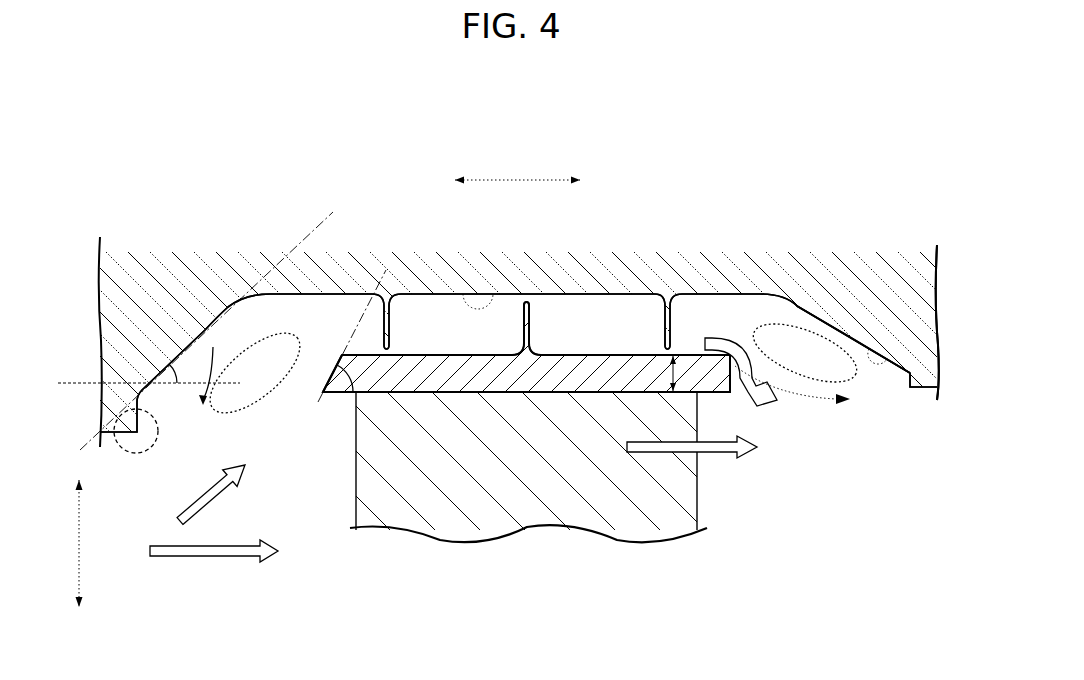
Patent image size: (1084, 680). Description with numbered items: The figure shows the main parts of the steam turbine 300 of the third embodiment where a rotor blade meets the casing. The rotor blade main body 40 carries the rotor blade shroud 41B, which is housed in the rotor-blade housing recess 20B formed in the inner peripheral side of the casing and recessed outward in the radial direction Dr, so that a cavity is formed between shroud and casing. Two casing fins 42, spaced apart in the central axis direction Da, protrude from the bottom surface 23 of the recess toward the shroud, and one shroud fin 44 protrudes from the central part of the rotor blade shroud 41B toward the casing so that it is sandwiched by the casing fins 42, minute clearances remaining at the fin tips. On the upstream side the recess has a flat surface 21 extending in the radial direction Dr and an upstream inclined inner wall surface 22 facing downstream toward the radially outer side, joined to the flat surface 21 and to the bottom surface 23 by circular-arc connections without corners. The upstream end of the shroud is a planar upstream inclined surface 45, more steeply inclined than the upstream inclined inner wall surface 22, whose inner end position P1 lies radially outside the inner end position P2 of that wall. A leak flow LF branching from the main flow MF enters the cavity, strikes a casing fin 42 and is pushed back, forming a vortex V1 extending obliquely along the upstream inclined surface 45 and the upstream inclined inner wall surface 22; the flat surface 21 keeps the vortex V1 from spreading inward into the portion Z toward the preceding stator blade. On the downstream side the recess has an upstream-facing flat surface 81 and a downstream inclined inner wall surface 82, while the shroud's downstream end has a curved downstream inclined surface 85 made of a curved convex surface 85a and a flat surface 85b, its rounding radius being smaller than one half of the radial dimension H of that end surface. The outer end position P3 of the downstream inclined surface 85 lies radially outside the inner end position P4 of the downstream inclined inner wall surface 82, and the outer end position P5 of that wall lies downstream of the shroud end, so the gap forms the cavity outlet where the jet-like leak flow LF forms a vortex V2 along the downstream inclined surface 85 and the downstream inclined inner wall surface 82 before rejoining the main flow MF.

The steam turbine 300 is at (710, 220).
The upstream inclined inner wall surface 22 is at (190, 322).
The flat surface 21 is at (150, 435).
The bottom surface 23 is at (480, 294).
The casing fin 42 is at (388, 305).
The shroud fin 44 is at (527, 303).
The rotor-blade housing recess 20B is at (600, 316).
The downstream inclined surface 85 is at (907, 126).
The curved convex surface 85a is at (800, 310).
The flat surface 85b is at (840, 334).
The downstream inclined inner wall surface 82 is at (878, 352).
The flat surface 81 is at (914, 392).
The rotor blade shroud 41B is at (717, 397).
The upstream inclined surface 45 is at (323, 393).
The rotor blade main body 40 is at (688, 507).
The portion Z is at (133, 454).
The vortex V1 is at (285, 325).
The vortex V2 is at (850, 347).
The end position P1 is at (338, 368).
The end position P2 is at (158, 407).
The end position P3 is at (713, 338).
The end position P4 is at (908, 376).
The end position P5 is at (765, 292).
The central axis direction Da is at (517, 166).
The radial direction Dr is at (95, 543).
The radial dimension H is at (670, 364).
The radius R is at (724, 363).
The main flow MF is at (205, 558).
The leak flow LF is at (218, 503).